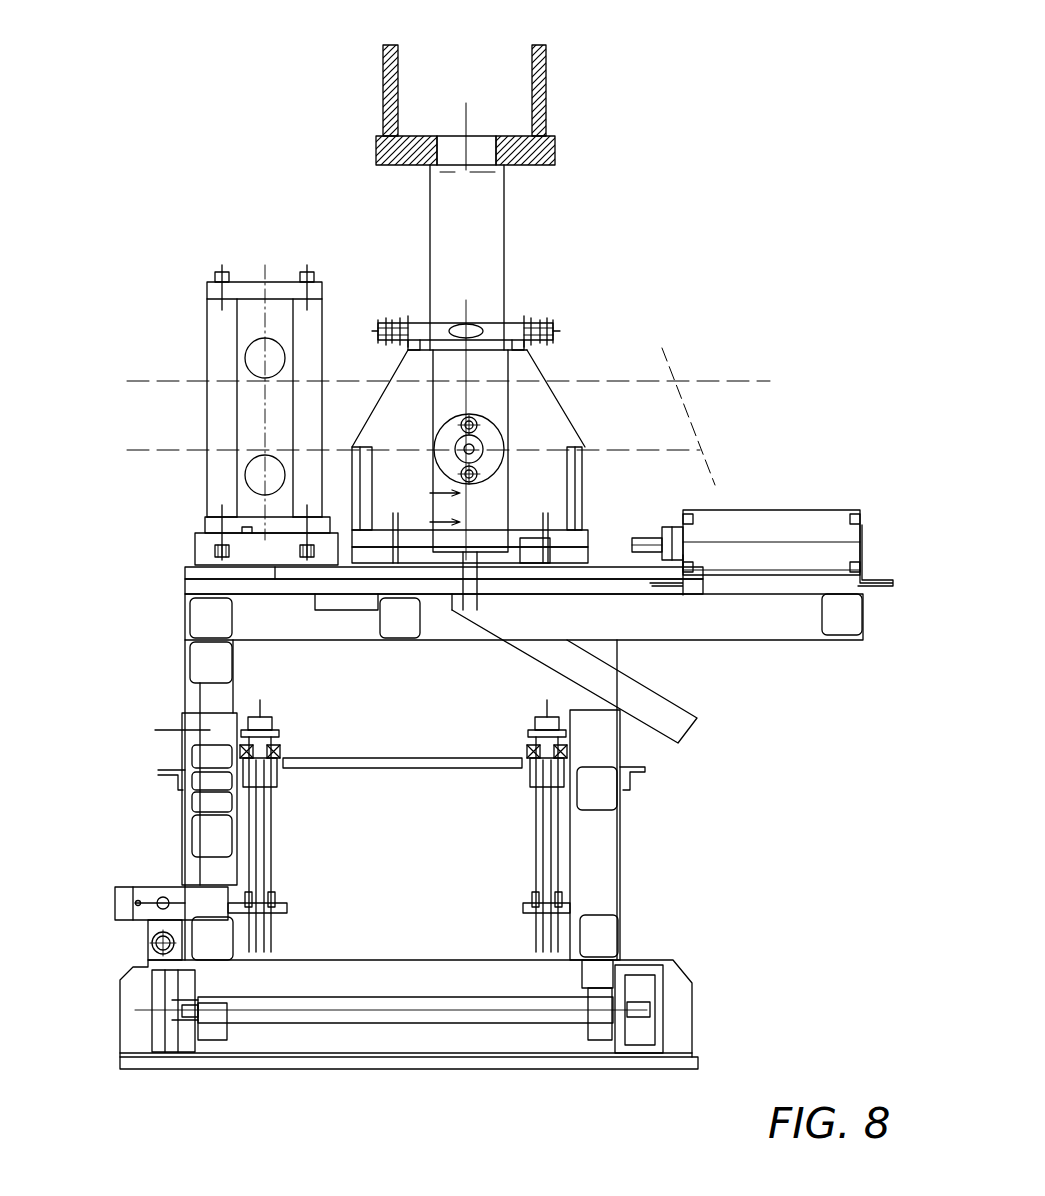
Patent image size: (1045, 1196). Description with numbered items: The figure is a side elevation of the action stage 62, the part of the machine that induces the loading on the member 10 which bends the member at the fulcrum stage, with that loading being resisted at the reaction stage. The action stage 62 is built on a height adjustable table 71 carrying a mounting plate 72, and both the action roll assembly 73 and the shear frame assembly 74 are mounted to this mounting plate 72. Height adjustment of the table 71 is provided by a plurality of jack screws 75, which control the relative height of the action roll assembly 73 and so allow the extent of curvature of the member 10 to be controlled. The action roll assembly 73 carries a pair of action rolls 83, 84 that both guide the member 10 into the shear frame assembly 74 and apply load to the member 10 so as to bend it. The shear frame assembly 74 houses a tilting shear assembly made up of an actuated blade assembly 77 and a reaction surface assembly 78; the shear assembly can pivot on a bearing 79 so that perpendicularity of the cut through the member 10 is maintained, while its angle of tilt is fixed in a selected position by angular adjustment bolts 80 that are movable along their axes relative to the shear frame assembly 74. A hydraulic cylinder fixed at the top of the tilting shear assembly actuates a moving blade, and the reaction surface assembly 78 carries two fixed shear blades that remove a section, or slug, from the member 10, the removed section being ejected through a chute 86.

The member 10 is at (148, 382).
The action stage 62 is at (637, 248).
The height adjustable table 71 is at (180, 660).
The mounting plate 72 is at (195, 575).
The action roll assembly 73 is at (283, 254).
The shear frame assembly 74 is at (537, 378).
The jack screws 75 is at (240, 855).
The actuated blade assembly 77 is at (505, 245).
The reaction surface assembly 78 is at (478, 512).
The bearing 79 is at (483, 445).
The angular adjustment bolts 80 is at (380, 325).
The action roll 83 is at (258, 358).
The action roll 84 is at (258, 477).
The chute 86 is at (697, 718).